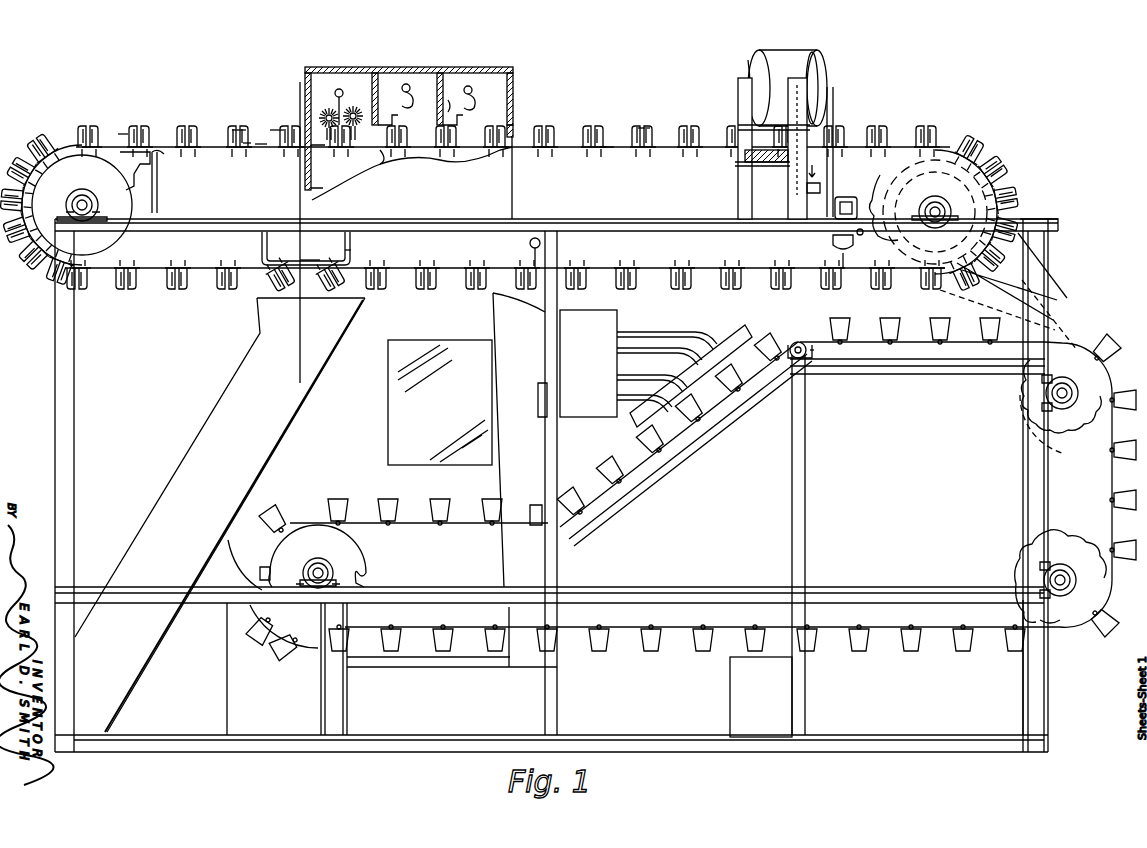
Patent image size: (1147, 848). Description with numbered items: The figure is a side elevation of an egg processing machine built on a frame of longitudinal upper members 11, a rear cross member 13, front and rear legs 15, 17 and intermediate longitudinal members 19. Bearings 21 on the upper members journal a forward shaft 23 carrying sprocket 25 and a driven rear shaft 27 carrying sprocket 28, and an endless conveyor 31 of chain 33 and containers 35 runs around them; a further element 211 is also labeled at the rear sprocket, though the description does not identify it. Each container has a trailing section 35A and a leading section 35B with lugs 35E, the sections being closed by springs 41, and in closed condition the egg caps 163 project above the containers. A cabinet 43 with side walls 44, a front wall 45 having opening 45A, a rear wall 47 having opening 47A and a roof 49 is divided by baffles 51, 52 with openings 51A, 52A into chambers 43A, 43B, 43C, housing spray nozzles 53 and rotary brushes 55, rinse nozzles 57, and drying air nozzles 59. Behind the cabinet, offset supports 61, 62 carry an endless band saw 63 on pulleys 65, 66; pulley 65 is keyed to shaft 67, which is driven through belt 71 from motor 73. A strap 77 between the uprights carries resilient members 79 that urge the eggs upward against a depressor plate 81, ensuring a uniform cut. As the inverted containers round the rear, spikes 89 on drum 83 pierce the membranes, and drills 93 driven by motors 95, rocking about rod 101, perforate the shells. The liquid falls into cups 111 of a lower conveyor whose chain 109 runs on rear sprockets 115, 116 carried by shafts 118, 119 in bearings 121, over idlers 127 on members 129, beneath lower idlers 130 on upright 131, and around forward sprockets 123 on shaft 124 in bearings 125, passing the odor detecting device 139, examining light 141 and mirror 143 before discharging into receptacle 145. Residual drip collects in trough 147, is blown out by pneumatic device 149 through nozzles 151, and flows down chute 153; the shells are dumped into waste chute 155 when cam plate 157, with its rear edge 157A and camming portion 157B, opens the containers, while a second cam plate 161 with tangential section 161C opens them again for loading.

The longitudinal upper members 11 is at (210, 218).
The rear cross member 13 is at (1058, 226).
The front legs 15 is at (55, 328).
The rear legs 17 is at (1030, 713).
The intermediate longitudinal members 19 is at (698, 577).
The bearings 21 is at (78, 195).
The shaft 23 is at (92, 198).
The sprocket 25 is at (128, 258).
The shaft 27 is at (938, 193).
The sprocket 28 is at (988, 178).
The endless conveyor 31 is at (607, 102).
The endless chain 33 is at (262, 144).
The container 35 is at (186, 113).
The trailing section 35A is at (230, 130).
The leading section 35B is at (276, 130).
The integral lugs 35E is at (247, 143).
The springs 41 is at (541, 152).
The cabinet 43 is at (455, 45).
The forward chamber 43A is at (335, 70).
The intermediate chamber 43B is at (397, 65).
The rearward chamber 43C is at (489, 65).
The side walls 44 is at (500, 200).
The front wall 45 is at (302, 72).
The transverse opening 45A is at (327, 166).
The rear wall 47 is at (513, 73).
The transverse opening 47A is at (513, 125).
The roof 49 is at (505, 67).
The transverse baffle 51 is at (372, 83).
The transverse opening 51A is at (378, 165).
The transverse baffle 52 is at (447, 100).
The transverse opening 52A is at (440, 163).
The spray nozzles 53 is at (338, 88).
The rotary brushes 55 is at (374, 97).
The spray nozzles 57 is at (412, 90).
The air nozzles 59 is at (475, 100).
The support 61 is at (795, 200).
The support 62 is at (740, 200).
The endless band saw 63 is at (793, 50).
The pulley 65 is at (824, 72).
The pulley 66 is at (752, 64).
The shaft 67 is at (836, 93).
The belt 71 is at (833, 122).
The motor 73 is at (858, 194).
The strap 77 is at (735, 163).
The resilient members 79 is at (781, 163).
The depressor plate 81 is at (738, 125).
The drum 83 is at (999, 290).
The radial spikes 89 is at (997, 302).
The drills 93 is at (840, 258).
The electric motors 95 is at (849, 253).
The rod 101 is at (855, 232).
The longitudinal chain 109 is at (915, 353).
The cups 111 is at (1136, 390).
The rear sprocket 115 is at (1014, 410).
The rear sprocket 116 is at (1010, 570).
The transverse shaft 118 is at (1078, 383).
The transverse shaft 119 is at (1082, 565).
The bearings 121 is at (1088, 415).
The sprockets 123 is at (366, 556).
The transverse shaft 124 is at (305, 556).
The bearings 125 is at (350, 555).
The idlers 127 is at (815, 356).
The intermediate frame members 129 is at (851, 374).
The lower idlers 130 is at (525, 502).
The upright frame member 131 is at (557, 565).
The odor detecting device 139 is at (746, 332).
The examining light 141 is at (528, 392).
The mirror 143 is at (388, 430).
The receptacle 145 is at (245, 668).
The trough 147 is at (790, 305).
The pneumatic device 149 is at (528, 244).
The nozzles 151 is at (533, 256).
The chute 153 is at (500, 320).
The waste chute 155 is at (245, 357).
The cam plate 157 is at (300, 258).
The rear edge 157A is at (370, 254).
The camming portion 157B is at (312, 262).
The second cam plate 161 is at (152, 174).
The tangential section 161C is at (123, 133).
The caps 163 is at (641, 122).
The shaft 211 is at (922, 209).